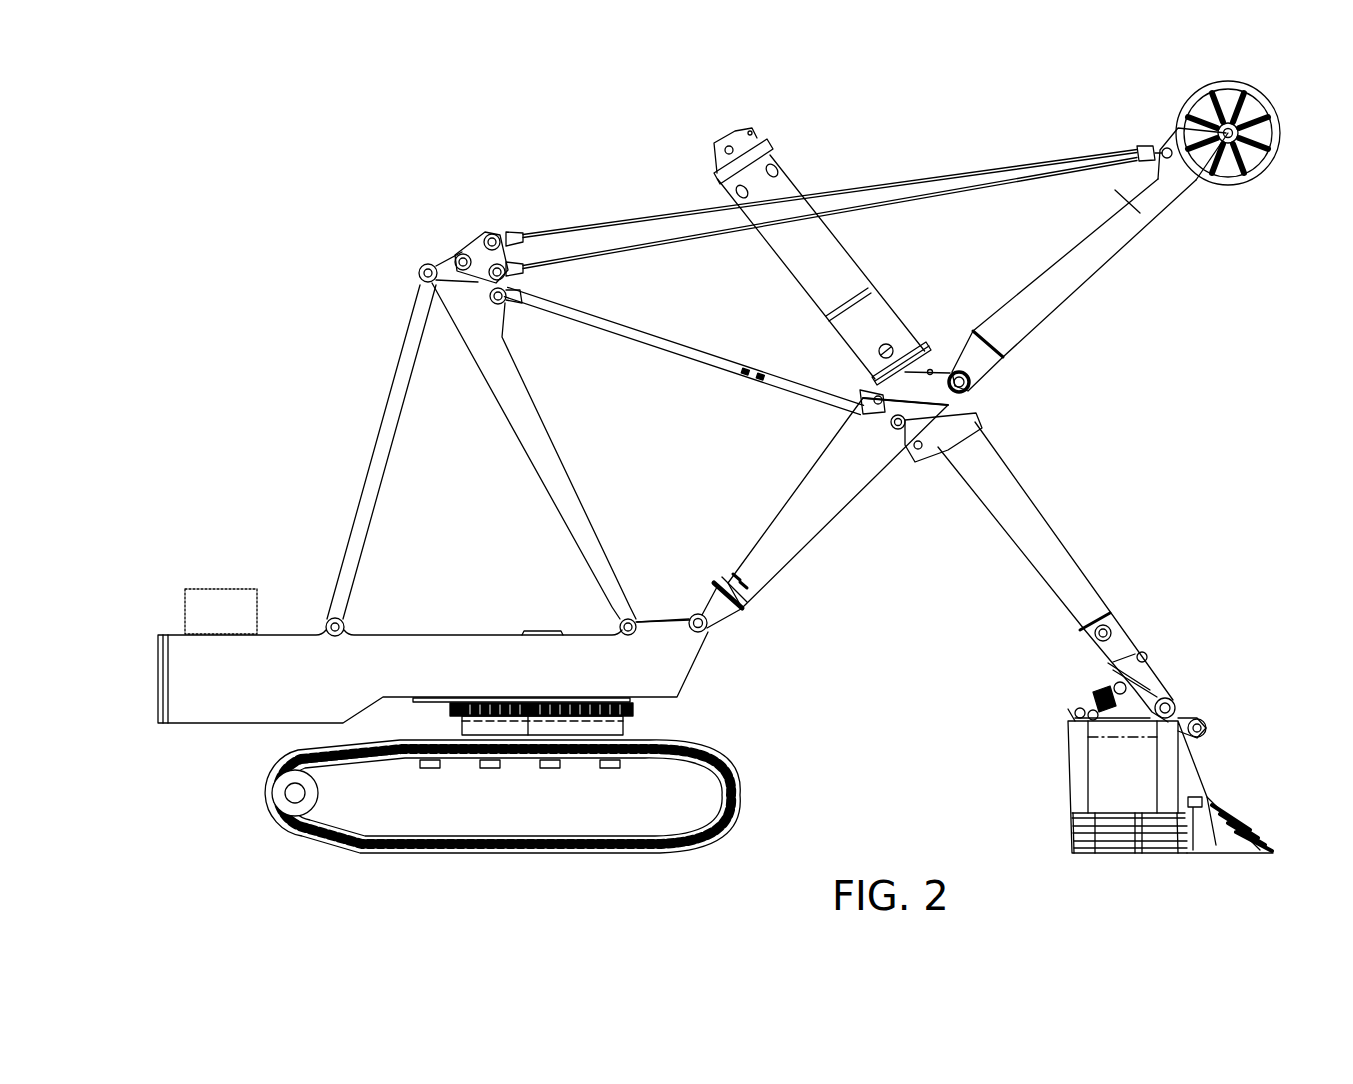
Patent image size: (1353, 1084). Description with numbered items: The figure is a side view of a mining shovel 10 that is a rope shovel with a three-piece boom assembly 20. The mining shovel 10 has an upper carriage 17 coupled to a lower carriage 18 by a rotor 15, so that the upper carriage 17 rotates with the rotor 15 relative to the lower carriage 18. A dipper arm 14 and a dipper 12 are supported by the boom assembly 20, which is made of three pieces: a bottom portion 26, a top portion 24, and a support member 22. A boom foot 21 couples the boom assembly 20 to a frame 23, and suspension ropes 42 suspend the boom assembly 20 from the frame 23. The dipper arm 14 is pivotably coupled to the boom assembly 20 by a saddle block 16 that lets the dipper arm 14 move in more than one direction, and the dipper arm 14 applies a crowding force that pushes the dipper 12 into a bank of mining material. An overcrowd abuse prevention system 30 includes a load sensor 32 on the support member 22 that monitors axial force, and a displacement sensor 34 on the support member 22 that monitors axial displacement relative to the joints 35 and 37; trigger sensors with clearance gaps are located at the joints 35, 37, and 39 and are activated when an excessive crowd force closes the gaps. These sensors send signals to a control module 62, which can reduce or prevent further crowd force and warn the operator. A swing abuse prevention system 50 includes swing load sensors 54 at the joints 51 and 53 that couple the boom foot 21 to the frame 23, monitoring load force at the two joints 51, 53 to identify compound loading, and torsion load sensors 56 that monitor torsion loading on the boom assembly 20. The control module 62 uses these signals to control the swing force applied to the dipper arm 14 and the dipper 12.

The mining shovel 10 is at (338, 192).
The dipper 12 is at (1200, 788).
The dipper arm 14 is at (1052, 547).
The rotor 15 is at (612, 730).
The saddle block 16 is at (932, 472).
The upper carriage 17 is at (262, 470).
The lower carriage 18 is at (735, 800).
The boom assembly 20 is at (1114, 302).
The boom foot 21 is at (713, 603).
The support member 22 is at (683, 350).
The frame 23 is at (490, 648).
The top portion 24 is at (1047, 298).
The bottom portion 26 is at (765, 572).
The overcrowd abuse prevention system 30 is at (146, 618).
The load sensor 32 is at (746, 368).
The displacement sensor 34 is at (759, 384).
The joint 35 is at (508, 304).
The joint 37 is at (898, 430).
The joint 39 is at (324, 622).
The suspension ropes 42 is at (935, 178).
The swing abuse prevention system 50 is at (164, 593).
The joint 51 is at (744, 580).
The joint 53 is at (743, 585).
The swing load sensors 54 is at (684, 615).
The torsion load sensors 56 is at (832, 505).
The control module 62 is at (237, 590).